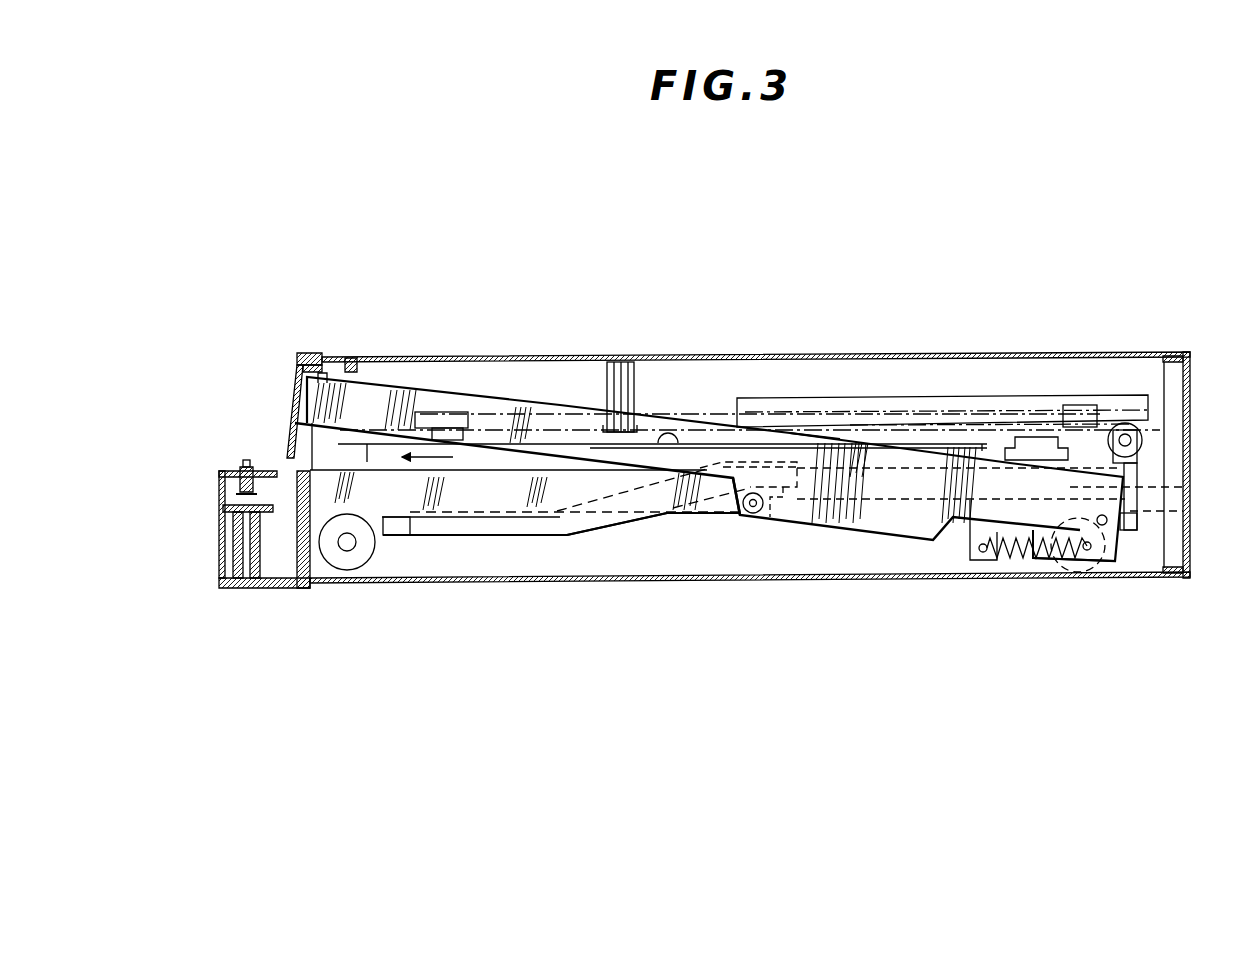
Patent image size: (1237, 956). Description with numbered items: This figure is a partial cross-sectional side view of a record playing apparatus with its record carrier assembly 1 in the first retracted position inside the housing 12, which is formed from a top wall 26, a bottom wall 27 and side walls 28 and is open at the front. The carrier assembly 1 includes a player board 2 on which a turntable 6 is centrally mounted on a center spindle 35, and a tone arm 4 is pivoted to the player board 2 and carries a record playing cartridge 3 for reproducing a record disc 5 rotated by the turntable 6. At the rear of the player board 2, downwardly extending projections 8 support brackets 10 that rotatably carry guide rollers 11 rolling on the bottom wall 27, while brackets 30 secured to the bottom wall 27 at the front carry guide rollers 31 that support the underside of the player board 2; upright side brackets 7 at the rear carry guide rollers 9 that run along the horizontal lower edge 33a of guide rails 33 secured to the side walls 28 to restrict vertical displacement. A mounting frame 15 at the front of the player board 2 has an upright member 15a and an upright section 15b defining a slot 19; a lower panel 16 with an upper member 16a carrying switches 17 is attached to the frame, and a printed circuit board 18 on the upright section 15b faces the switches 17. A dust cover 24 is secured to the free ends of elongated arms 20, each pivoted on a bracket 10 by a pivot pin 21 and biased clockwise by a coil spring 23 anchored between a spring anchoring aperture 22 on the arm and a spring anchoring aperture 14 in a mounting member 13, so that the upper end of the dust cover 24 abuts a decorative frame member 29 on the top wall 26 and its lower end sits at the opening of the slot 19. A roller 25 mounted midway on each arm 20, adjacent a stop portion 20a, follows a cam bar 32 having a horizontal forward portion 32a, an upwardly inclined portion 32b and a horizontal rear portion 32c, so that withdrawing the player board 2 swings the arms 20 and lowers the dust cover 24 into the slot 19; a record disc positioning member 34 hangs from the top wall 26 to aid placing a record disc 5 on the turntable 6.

The record carrier assembly 1 is at (527, 470).
The player board 2 is at (1190, 372).
The record playing cartridge 3 is at (430, 412).
The tone arm 4 is at (727, 416).
The record disc 5 is at (980, 447).
The turntable 6 is at (478, 458).
The upright side bracket 7 is at (1137, 458).
The downwardly extending projection 8 is at (1110, 487).
The guide roller 9 is at (1142, 436).
The bracket 10 is at (1067, 553).
The guide roller 11 is at (1108, 573).
The housing 12 is at (567, 356).
The mounting member 13 is at (968, 533).
The spring anchoring aperture 14 is at (983, 553).
The mounting frame 15 is at (265, 590).
The upright member 15a is at (300, 590).
The upright section 15b is at (238, 590).
The lower panel 16 is at (219, 507).
The upper member 16a is at (220, 470).
The switches 17 is at (245, 466).
The printed circuit board 18 is at (270, 513).
The slot 19 is at (283, 497).
The elongated arm 20 is at (707, 423).
The stop portion 20a is at (735, 490).
The pivot pin 21 is at (1103, 527).
The spring anchoring aperture 22 is at (1087, 552).
The coil spring 23 is at (1022, 558).
The dust cover 24 is at (296, 382).
The roller 25 is at (747, 518).
The top wall 26 is at (817, 355).
The bottom wall 27 is at (852, 582).
The side wall 28 is at (1078, 365).
The decorative frame member 29 is at (313, 352).
The bracket 30 is at (365, 578).
The guide roller 31 is at (378, 545).
The cam bar 32 is at (568, 540).
The horizontal forward portion 32a is at (492, 538).
The upwardly inclined portion 32b is at (620, 530).
The horizontal rear portion 32c is at (780, 520).
The guide rail 33 is at (1030, 397).
The horizontal lower edge 33a is at (1107, 421).
The record disc positioning member 34 is at (637, 388).
The center spindle 35 is at (670, 433).